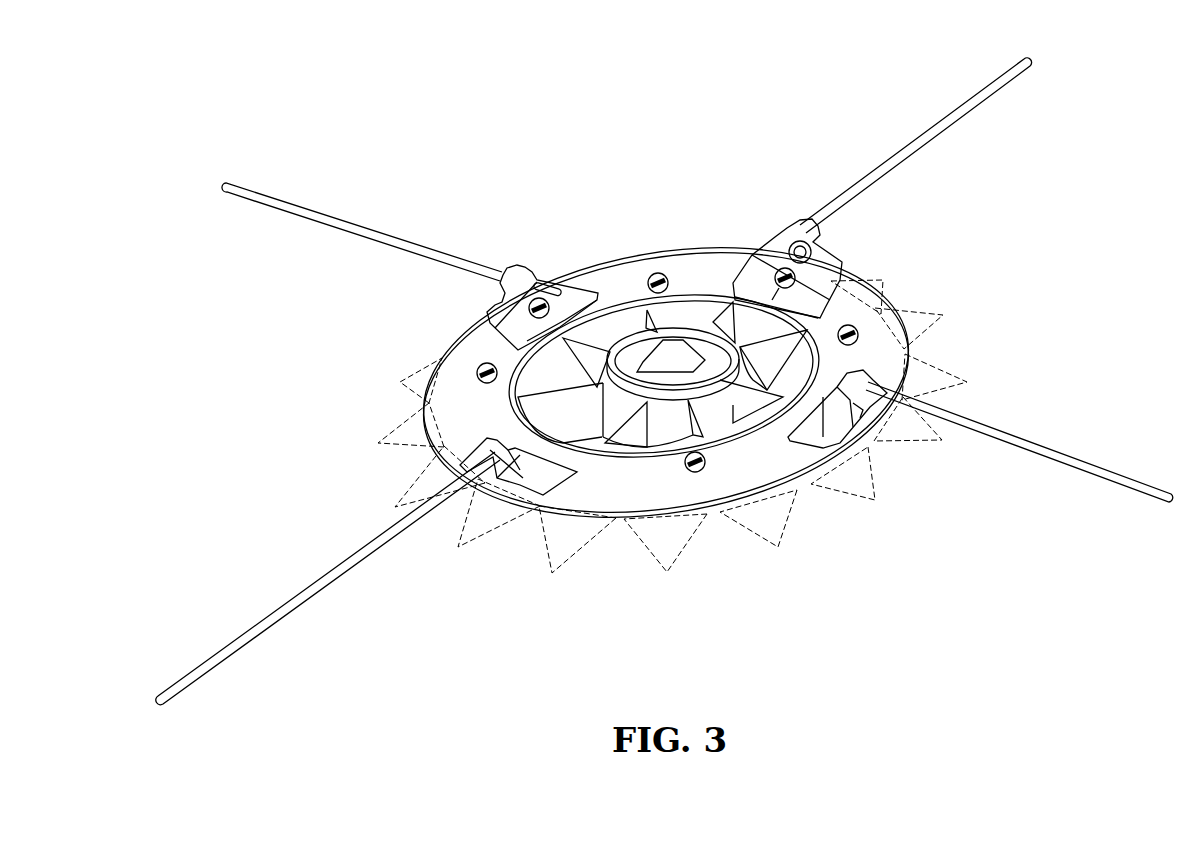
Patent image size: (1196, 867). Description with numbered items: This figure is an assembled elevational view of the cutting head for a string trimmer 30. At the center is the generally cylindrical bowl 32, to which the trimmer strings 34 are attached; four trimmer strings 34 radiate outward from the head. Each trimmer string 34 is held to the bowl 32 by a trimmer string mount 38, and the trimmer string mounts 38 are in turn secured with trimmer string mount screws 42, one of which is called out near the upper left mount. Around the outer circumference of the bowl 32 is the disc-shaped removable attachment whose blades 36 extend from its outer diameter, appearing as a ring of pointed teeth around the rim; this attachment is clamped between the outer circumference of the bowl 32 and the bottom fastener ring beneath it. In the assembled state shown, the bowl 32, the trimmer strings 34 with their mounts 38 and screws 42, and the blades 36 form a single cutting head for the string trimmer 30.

The string trimmer 30 is at (1052, 79).
The generally cylindrical bowl 32 is at (905, 318).
The trimmer strings 34 is at (926, 137).
The blades 36 is at (932, 369).
The trimmer string mounts 38 is at (822, 246).
The trimmer string mount screws 42 is at (542, 302).